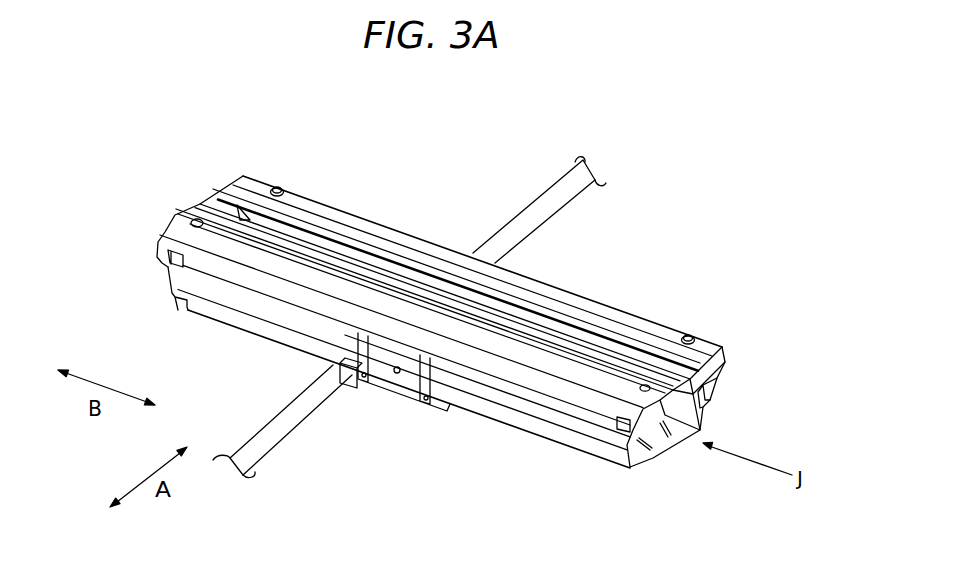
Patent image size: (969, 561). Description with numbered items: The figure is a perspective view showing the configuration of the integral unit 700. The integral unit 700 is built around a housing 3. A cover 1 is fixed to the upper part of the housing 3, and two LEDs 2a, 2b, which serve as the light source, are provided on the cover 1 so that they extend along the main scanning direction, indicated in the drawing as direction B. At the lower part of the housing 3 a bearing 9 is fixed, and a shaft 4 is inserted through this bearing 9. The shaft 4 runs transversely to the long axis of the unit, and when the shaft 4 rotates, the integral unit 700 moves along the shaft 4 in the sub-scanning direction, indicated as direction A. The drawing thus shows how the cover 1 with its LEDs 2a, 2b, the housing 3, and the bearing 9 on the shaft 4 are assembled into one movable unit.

The integral unit 700 is at (332, 160).
The cover 1 is at (182, 218).
The LED 2a is at (400, 247).
The LED 2b is at (578, 345).
The housing 3 is at (260, 325).
The shaft 4 is at (266, 445).
The bearing 9 is at (357, 383).